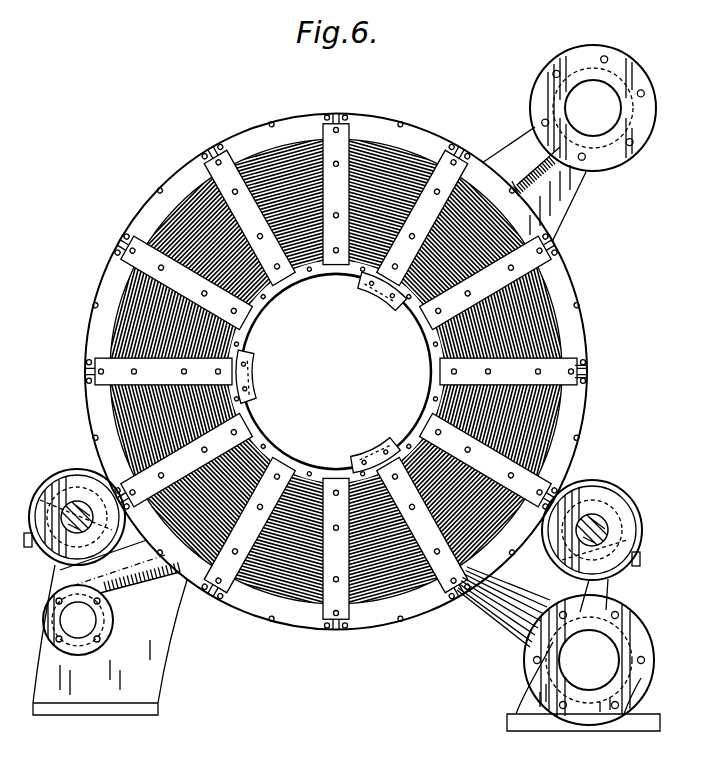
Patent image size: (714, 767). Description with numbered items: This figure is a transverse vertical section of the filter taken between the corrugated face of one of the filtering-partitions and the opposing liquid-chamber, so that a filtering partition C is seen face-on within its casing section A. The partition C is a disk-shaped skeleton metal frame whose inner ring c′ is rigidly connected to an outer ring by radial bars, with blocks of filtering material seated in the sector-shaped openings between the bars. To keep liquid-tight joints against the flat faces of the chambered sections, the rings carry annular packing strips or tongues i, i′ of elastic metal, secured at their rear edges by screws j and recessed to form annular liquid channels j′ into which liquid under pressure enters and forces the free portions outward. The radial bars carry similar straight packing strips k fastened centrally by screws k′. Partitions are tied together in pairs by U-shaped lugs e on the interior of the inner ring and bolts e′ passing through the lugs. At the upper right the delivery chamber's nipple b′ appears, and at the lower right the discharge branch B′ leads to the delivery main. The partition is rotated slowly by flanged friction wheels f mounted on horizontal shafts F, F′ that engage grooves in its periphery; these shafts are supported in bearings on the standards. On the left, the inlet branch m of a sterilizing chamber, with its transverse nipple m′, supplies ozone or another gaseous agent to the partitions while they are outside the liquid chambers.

The filtering partition C is at (345, 371).
The inner ring c′ is at (306, 450).
The straight packing strips k is at (336, 371).
The screws k′ is at (336, 372).
The annular packing strip i is at (335, 370).
The annular packing strip i′ is at (336, 372).
The screws j is at (334, 372).
The annular liquid channels j′ is at (589, 382).
The U-shaped lugs e is at (378, 372).
The bolts e′ is at (257, 376).
The end section A is at (534, 184).
The nipple b′ is at (655, 119).
The discharge branch B′ is at (503, 607).
The shaft F is at (77, 500).
The shaft F′ is at (598, 516).
The flanged friction wheels f is at (63, 490).
The inlet branch m is at (120, 566).
The nipple m′ is at (52, 626).